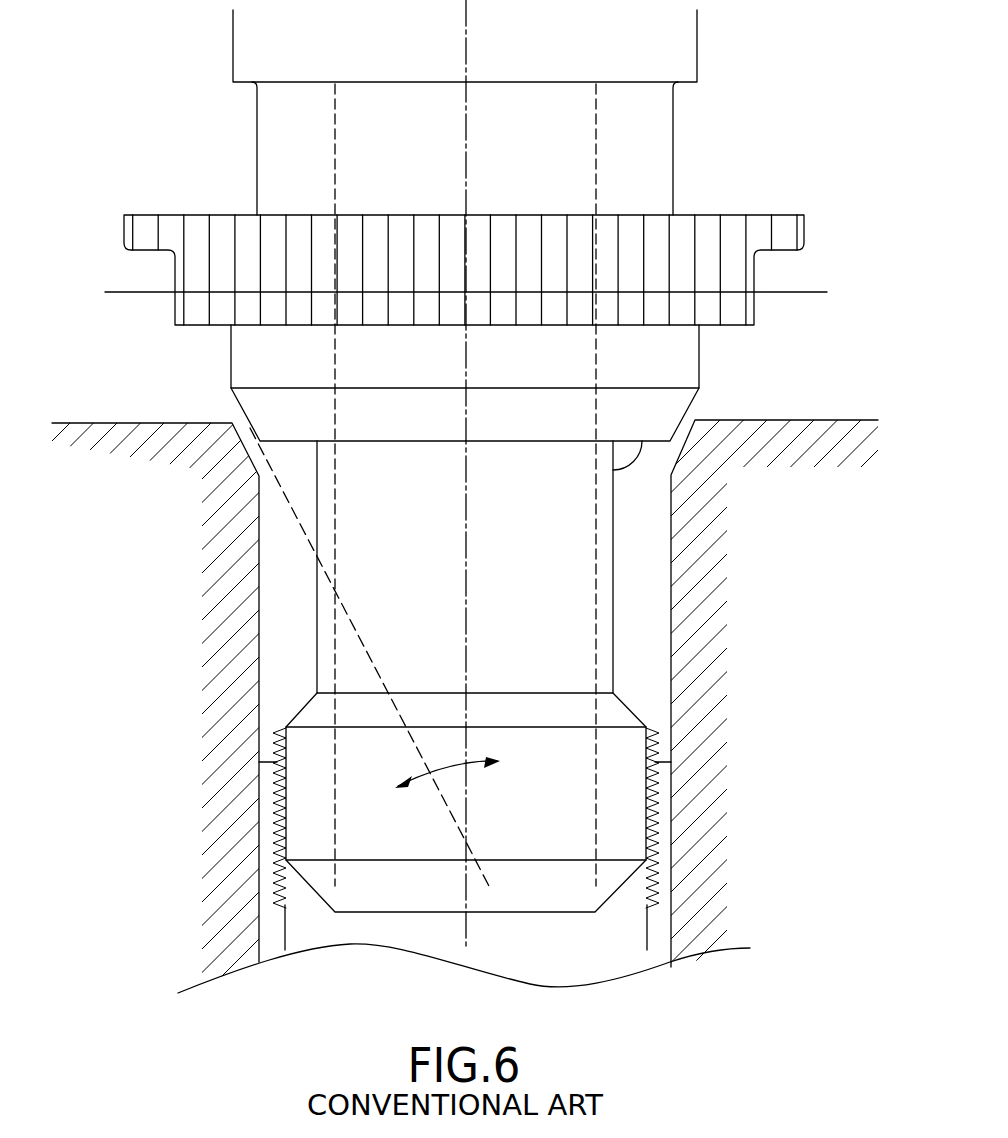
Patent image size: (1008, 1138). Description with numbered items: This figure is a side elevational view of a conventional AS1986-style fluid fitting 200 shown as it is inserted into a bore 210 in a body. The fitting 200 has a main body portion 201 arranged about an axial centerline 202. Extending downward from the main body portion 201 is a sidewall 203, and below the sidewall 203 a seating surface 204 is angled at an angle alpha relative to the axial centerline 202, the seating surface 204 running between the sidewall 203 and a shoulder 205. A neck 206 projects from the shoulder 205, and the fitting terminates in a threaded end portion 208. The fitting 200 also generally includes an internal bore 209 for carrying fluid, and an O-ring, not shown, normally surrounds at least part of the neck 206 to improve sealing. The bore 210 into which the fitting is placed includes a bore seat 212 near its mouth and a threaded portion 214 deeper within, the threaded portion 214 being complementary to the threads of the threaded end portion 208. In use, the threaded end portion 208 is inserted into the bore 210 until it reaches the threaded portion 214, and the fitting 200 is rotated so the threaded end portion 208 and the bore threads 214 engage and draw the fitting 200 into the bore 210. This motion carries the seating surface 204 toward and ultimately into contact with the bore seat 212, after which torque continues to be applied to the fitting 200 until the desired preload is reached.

The fitting 200 is at (163, 168).
The main body portion 201 is at (667, 335).
The axial centerline 202 is at (470, 122).
The sidewall 203 is at (700, 370).
The seating surface 204 is at (693, 408).
The shoulder 205 is at (628, 468).
The neck 206 is at (613, 628).
The threaded end portion 208 is at (590, 803).
The internal bore 209 is at (597, 555).
The bore 210 is at (285, 613).
The bore seat 212 is at (240, 435).
The threaded portion 214 is at (277, 889).